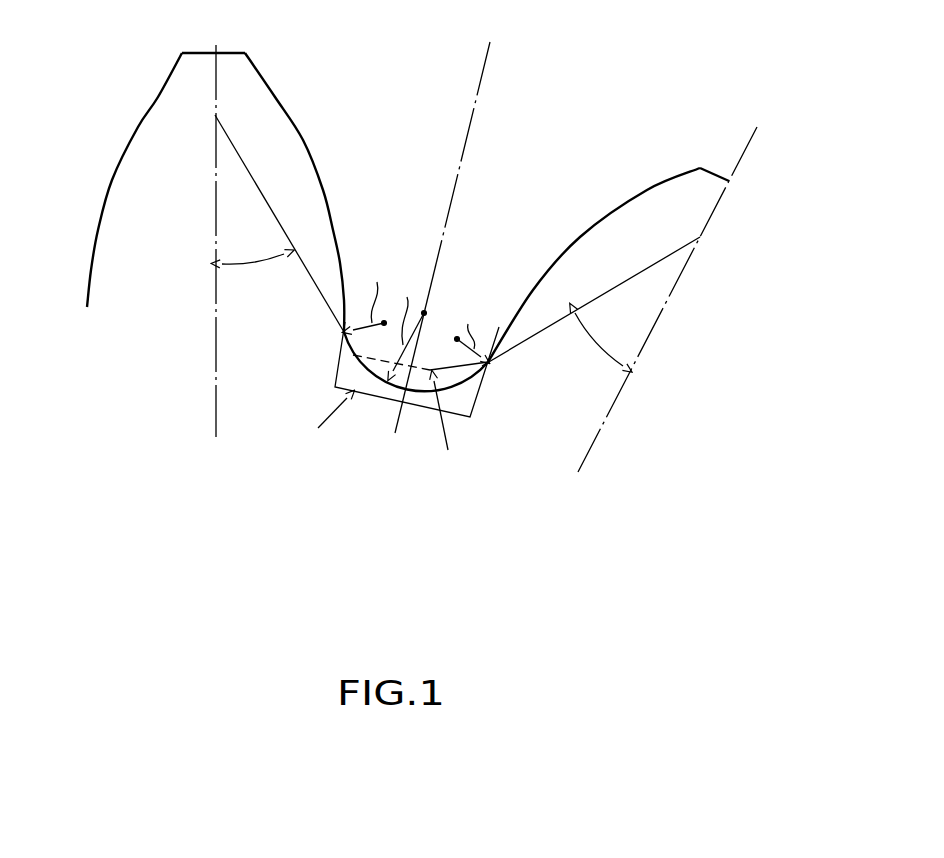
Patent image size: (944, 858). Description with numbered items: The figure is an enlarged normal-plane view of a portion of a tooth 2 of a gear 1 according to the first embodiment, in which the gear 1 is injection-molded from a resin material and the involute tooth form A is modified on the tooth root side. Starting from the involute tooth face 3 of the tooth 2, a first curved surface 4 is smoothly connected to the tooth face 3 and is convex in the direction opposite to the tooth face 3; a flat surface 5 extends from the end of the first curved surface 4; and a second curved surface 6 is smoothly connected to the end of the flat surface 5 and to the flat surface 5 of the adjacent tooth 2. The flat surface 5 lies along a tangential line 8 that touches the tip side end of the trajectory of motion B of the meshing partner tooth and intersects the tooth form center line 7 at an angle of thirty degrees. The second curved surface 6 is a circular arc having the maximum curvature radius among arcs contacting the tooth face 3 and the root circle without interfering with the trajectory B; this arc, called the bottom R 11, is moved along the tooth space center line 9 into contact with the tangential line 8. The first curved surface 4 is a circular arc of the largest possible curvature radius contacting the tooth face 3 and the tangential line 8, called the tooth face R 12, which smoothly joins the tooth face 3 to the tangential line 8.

The gear 1 is at (364, 117).
The tooth 2 is at (134, 124).
The tooth face 3 is at (337, 243).
The first curved surface 4 is at (406, 366).
The flat surface 5 is at (354, 356).
The second curved surface 6 is at (387, 393).
The tooth form center line 7 is at (216, 316).
The tangential line 8 is at (258, 187).
The tooth space center line 9 is at (470, 128).
The bottom R 11 is at (392, 369).
The tooth face R 12 is at (343, 332).